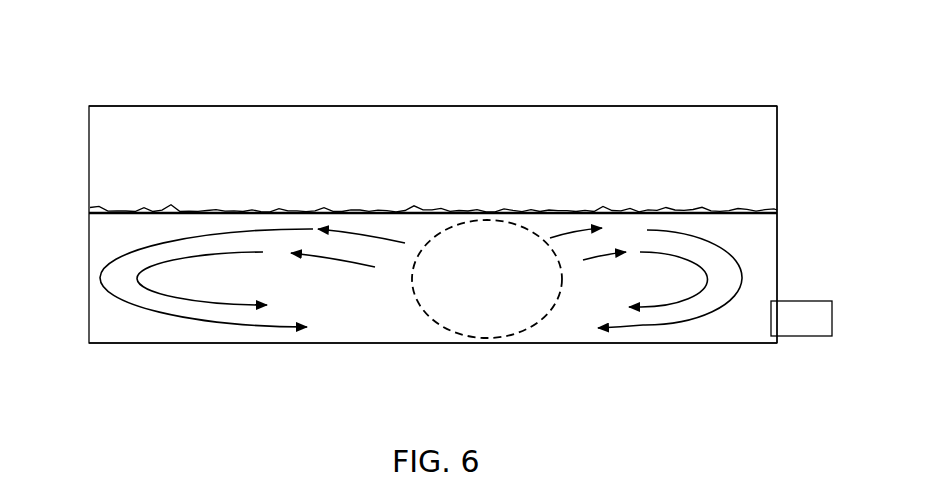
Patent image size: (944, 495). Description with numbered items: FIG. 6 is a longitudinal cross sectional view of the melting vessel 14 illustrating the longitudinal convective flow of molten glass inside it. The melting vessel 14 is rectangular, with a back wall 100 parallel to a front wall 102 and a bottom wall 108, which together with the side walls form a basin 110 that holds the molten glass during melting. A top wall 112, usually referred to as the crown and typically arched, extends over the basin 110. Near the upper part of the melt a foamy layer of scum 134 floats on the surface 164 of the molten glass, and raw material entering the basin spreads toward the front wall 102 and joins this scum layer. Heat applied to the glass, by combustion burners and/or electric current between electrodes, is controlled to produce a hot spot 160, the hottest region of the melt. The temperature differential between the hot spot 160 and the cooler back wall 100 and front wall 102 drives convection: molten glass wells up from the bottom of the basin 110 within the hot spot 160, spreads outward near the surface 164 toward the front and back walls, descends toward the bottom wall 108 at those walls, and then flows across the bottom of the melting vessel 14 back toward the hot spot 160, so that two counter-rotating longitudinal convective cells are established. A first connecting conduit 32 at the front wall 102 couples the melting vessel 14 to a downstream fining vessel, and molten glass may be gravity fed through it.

The melting vessel 14 is at (156, 62).
The back wall 100 is at (89, 309).
The front wall 102 is at (778, 245).
The bottom wall 108 is at (377, 344).
The basin 110 is at (382, 309).
The top wall 112 is at (529, 105).
The foamy layer of scum 134 is at (587, 203).
The surface of the melt 164 is at (227, 213).
The hot spot 160 is at (507, 337).
The first connecting conduit 32 is at (803, 336).